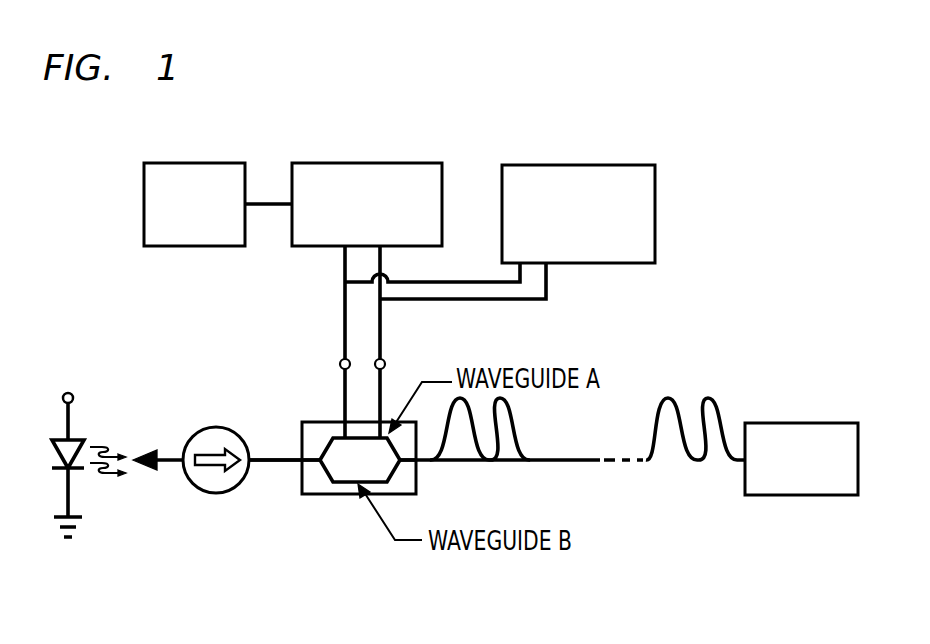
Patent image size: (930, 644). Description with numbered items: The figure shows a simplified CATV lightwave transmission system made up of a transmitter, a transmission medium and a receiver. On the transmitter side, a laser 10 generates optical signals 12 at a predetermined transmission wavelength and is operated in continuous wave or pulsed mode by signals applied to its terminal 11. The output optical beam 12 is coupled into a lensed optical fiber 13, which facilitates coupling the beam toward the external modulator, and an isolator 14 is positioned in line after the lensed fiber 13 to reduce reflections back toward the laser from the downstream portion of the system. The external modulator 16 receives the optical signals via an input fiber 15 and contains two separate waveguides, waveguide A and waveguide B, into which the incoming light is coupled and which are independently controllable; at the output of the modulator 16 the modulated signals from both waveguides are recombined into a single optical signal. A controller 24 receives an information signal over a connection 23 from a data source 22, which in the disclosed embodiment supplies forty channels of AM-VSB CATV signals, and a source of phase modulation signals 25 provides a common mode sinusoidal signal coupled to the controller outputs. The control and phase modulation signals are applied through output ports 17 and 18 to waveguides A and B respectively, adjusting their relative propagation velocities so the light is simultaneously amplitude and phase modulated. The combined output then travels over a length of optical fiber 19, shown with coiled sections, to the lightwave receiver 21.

The laser 10 is at (52, 440).
The terminal 11 is at (62, 396).
The optical signals 12 is at (104, 445).
The lensed optical fiber 13 is at (157, 455).
The isolator 14 is at (215, 427).
The input fiber 15 is at (259, 456).
The external modulator 16 is at (318, 495).
The output port 17 is at (339, 364).
The output port 18 is at (386, 364).
The optical fiber 19 is at (430, 463).
The receiver 21 is at (771, 493).
The data source 22 is at (195, 162).
The data line 23 is at (272, 200).
The controller 24 is at (356, 162).
The source of phase modulation signals 25 is at (634, 176).